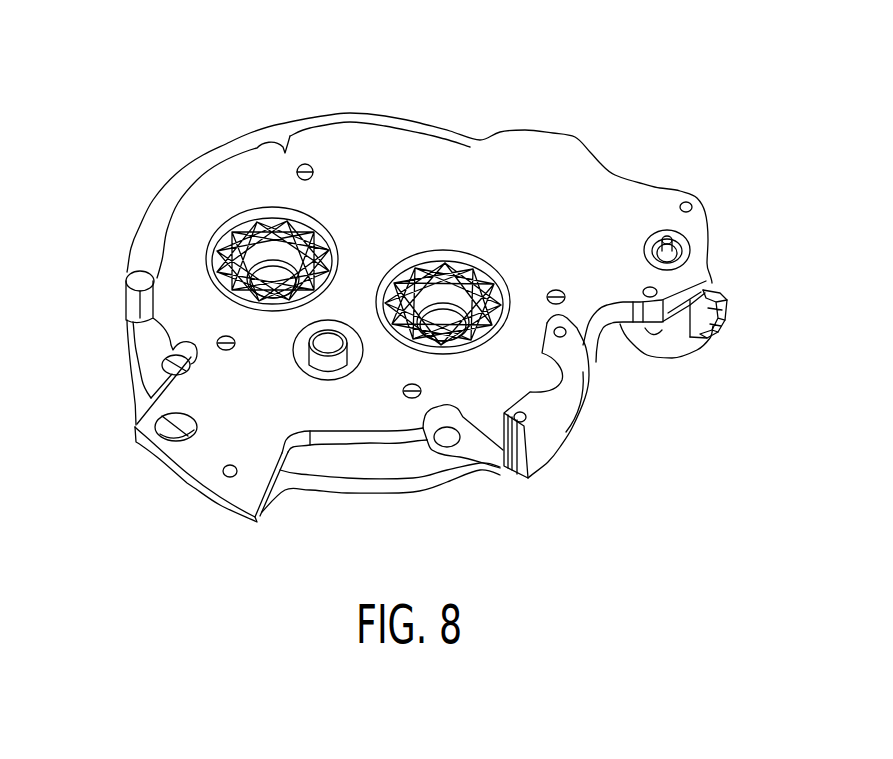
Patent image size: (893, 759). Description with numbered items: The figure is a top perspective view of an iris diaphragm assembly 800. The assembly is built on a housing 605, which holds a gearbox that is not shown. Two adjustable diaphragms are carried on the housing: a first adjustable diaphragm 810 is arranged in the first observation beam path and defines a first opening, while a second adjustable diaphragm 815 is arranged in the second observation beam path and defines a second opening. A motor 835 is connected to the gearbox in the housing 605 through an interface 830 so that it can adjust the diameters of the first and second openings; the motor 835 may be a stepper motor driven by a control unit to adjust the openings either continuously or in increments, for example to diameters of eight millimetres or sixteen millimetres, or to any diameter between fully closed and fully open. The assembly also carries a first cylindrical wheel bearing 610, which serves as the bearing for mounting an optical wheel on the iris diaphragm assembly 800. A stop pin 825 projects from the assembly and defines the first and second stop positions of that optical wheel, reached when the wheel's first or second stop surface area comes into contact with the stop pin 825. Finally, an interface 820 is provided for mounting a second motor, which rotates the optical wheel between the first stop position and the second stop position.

The iris diaphragm assembly 800 is at (684, 105).
The housing 605 is at (547, 143).
The first adjustable diaphragm 810 is at (307, 252).
The second adjustable diaphragm 815 is at (473, 270).
The first cylindrical wheel bearing 610 is at (333, 327).
The stop pin 825 is at (145, 285).
The interface 830 is at (675, 245).
The interface 820 is at (543, 402).
The motor 835 is at (672, 345).